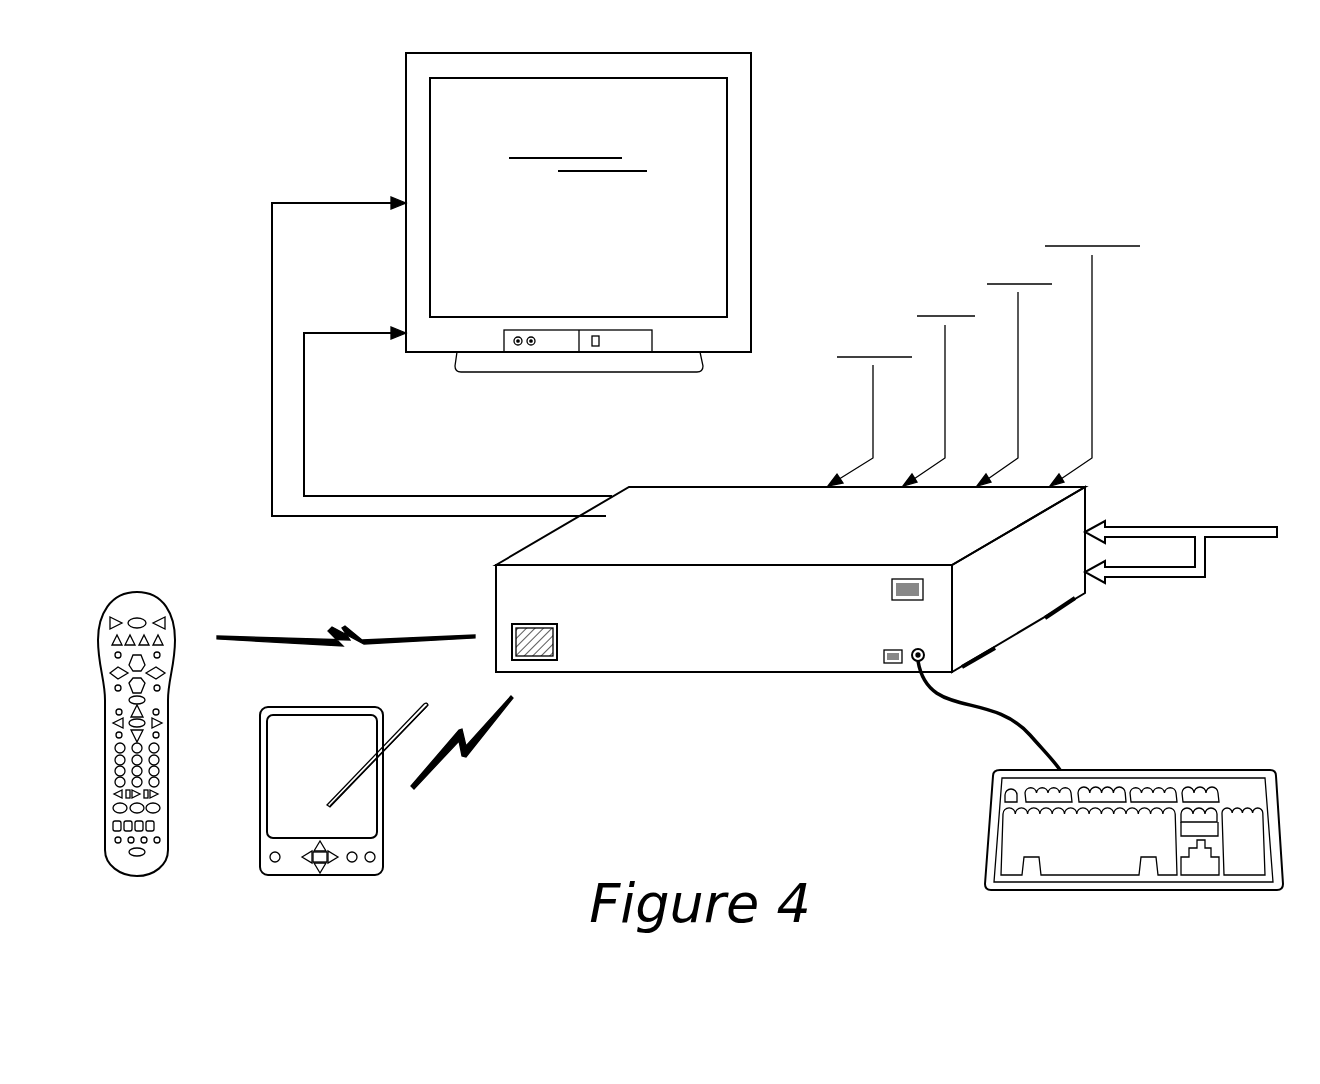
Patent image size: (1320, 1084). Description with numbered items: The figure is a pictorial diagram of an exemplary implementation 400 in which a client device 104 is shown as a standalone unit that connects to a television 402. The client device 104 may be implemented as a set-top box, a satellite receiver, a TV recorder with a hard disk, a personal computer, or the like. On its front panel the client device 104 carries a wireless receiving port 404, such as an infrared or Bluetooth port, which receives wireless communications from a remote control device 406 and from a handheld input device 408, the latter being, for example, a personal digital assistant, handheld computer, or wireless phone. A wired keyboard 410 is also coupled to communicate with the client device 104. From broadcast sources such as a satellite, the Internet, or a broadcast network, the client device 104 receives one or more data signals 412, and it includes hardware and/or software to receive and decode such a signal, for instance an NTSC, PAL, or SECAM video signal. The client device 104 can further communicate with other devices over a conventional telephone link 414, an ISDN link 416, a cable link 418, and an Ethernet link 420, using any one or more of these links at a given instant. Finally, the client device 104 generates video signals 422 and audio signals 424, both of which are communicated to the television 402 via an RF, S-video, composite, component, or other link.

The exemplary implementation 400 is at (1198, 115).
The television 402 is at (751, 212).
The client device 104 is at (695, 485).
The wireless receiving port 404 is at (548, 623).
The remote control device 406 is at (137, 590).
The handheld input device 408 is at (385, 822).
The wired keyboard 410 is at (1183, 769).
The data signal 412 is at (1158, 577).
The telephone link 414 is at (873, 313).
The ISDN link 416 is at (945, 275).
The cable link 418 is at (1018, 243).
The Ethernet link 420 is at (1092, 207).
The video signal 422 is at (363, 237).
The audio signal 424 is at (363, 368).